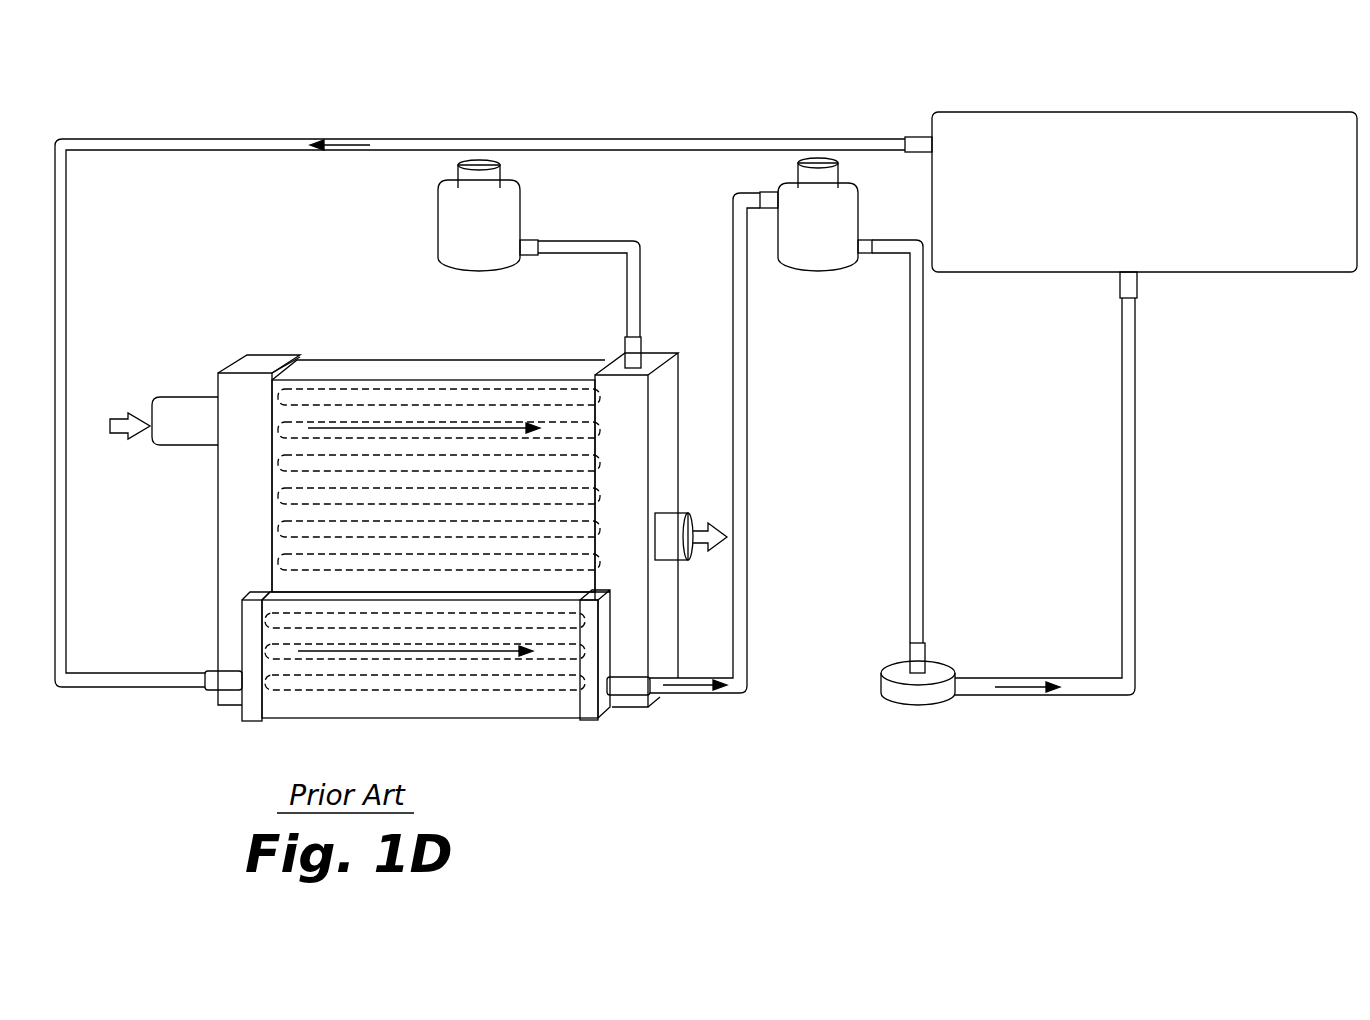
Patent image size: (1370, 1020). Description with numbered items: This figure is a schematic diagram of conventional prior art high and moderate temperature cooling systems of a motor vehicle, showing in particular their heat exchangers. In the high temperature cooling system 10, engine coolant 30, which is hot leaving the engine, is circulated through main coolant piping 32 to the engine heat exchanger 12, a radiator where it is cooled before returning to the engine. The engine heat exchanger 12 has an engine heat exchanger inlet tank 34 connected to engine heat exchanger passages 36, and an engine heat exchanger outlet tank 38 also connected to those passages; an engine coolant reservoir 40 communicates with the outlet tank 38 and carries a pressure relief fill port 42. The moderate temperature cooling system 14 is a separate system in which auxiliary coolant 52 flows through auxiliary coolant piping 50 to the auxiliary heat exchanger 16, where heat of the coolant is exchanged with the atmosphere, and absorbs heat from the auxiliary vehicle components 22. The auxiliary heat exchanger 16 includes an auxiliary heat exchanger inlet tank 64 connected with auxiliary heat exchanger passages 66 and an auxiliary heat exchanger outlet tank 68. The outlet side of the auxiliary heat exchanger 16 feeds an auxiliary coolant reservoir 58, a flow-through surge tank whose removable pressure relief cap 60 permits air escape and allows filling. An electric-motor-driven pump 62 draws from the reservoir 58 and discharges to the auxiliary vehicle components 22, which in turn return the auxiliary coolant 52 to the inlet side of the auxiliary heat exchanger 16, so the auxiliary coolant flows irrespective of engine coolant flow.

The high temperature cooling system 10 is at (412, 471).
The engine heat exchanger 12 is at (438, 435).
The moderate temperature cooling system 14 is at (418, 716).
The auxiliary heat exchanger 16 is at (436, 701).
The auxiliary vehicle components 22 is at (948, 112).
The engine coolant 30 is at (118, 432).
The main coolant piping 32 is at (197, 397).
The engine heat exchanger inlet tank 34 is at (258, 366).
The engine heat exchanger passages 36 is at (548, 455).
The engine heat exchanger outlet tank 38 is at (652, 360).
The engine coolant reservoir 40 is at (528, 212).
The pressure relief fill port 42 is at (500, 172).
The auxiliary coolant piping 50 is at (440, 140).
The auxiliary coolant 52 is at (365, 148).
The auxiliary coolant reservoir 58 is at (854, 212).
The removable pressure relief cap 60 is at (838, 170).
The pump 62 is at (938, 668).
The auxiliary heat exchanger inlet tank 64 is at (248, 725).
The auxiliary heat exchanger passages 66 is at (537, 628).
The auxiliary heat exchanger outlet tank 68 is at (592, 725).